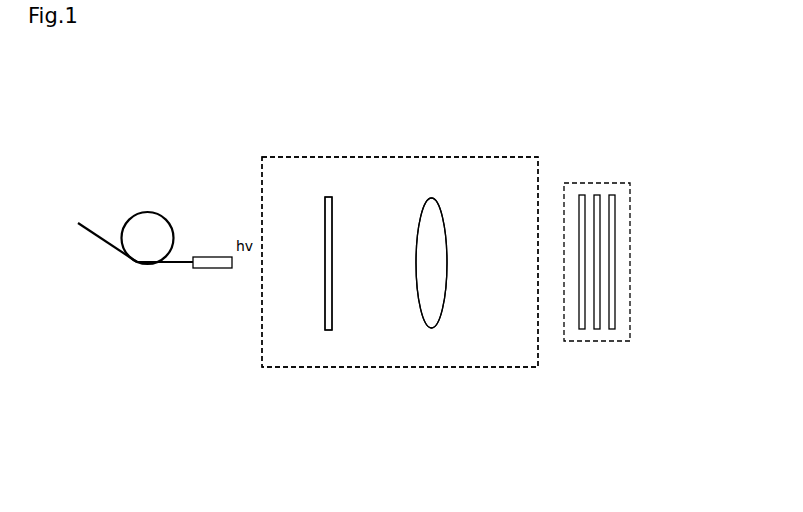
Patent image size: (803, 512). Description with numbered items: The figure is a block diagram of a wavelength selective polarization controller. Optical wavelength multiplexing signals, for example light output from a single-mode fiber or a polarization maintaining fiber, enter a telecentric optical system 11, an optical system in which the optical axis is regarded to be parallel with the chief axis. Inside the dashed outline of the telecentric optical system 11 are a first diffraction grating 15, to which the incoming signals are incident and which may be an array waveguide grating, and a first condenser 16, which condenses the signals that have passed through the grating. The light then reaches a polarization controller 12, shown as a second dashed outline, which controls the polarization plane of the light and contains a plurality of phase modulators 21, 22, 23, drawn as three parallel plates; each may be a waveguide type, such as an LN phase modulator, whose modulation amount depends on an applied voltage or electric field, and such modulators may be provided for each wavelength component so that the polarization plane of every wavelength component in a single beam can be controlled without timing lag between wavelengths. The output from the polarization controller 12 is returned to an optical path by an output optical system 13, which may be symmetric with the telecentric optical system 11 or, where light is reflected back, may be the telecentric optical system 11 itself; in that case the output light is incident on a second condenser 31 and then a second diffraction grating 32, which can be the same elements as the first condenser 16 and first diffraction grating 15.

The telecentric optical system 11 is at (435, 157).
The output optical system 13 is at (400, 262).
The polarization controller 12 is at (630, 247).
The first diffraction grating 15 is at (332, 253).
The second diffraction grating 32 is at (328, 263).
The first condenser 16 is at (446, 236).
The second condenser 31 is at (431, 263).
The phase modulator 21 is at (581, 329).
The phase modulator 22 is at (598, 195).
The phase modulator 23 is at (612, 329).